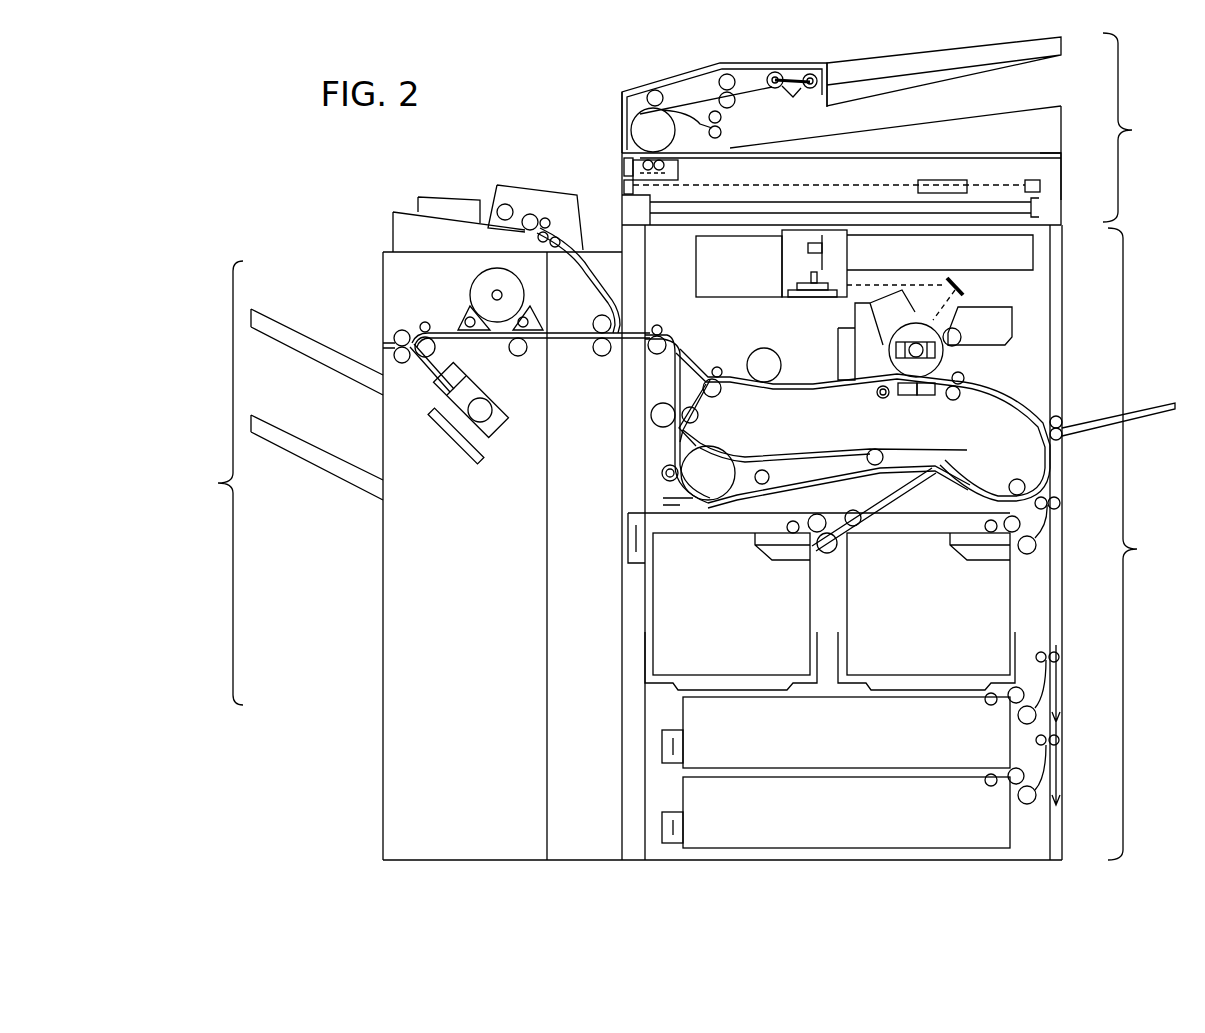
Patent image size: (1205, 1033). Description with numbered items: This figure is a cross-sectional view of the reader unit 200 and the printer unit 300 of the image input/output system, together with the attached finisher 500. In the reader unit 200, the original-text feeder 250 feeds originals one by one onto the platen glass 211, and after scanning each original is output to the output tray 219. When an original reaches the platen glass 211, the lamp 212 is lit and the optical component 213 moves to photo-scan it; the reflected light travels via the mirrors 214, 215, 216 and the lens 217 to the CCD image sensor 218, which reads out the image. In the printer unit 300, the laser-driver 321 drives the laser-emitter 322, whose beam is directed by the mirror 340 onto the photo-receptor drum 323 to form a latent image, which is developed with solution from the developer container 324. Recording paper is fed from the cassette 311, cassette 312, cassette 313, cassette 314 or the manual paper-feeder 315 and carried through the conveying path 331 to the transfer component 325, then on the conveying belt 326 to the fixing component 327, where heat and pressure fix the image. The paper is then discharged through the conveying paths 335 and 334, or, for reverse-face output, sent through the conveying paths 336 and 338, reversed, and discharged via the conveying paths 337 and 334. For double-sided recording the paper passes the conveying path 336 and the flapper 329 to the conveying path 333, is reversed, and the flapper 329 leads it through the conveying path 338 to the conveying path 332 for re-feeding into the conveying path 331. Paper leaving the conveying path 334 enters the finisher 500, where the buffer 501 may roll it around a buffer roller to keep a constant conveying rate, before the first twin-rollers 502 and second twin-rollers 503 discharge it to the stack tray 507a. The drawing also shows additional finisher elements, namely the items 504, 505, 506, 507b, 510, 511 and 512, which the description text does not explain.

The reader unit 200 is at (1140, 127).
The platen glass 211 is at (1053, 152).
The lamp 212 is at (628, 136).
The optical component 213 is at (678, 162).
The mirror 214 is at (680, 175).
The mirror 215 is at (631, 165).
The mirror 216 is at (628, 190).
The lens 217 is at (965, 183).
The CCD image sensor 218 is at (1042, 186).
The output tray 219 is at (993, 110).
The original-text feeder 250 is at (835, 85).
The printer unit 300 is at (1145, 544).
The cassette 311 is at (1010, 600).
The cassette 312 is at (645, 655).
The cassette 313 is at (1010, 740).
The cassette 314 is at (1010, 830).
The manual paper-feeder 315 is at (1063, 422).
The laser-driver 321 is at (695, 270).
The laser-emitter 322 is at (808, 297).
The photo-receptor drum 323 is at (888, 353).
The developer container 324 is at (1017, 330).
The transfer component 325 is at (924, 398).
The conveying belt 326 is at (843, 400).
The fixing component 327 is at (747, 367).
The flapper 329 is at (680, 442).
The conveying path 331 is at (985, 392).
The conveying path 332 is at (800, 478).
The conveying path 333 is at (773, 457).
The conveying path 334 is at (633, 332).
The conveying path 335 is at (683, 352).
The conveying path 336 is at (706, 396).
The conveying path 337 is at (675, 390).
The conveying path 338 is at (707, 480).
The mirror 340 is at (966, 287).
The finisher 500 is at (210, 483).
The buffer 501 is at (470, 290).
The first twin-rollers 502 is at (420, 327).
The second twin-rollers 503 is at (395, 335).
The conveyance roller 504 is at (437, 352).
The conveyance path 505 is at (428, 368).
The stapler unit 506 is at (458, 448).
The stack tray 507a is at (320, 360).
The discharge tray 507b is at (320, 463).
The upper tray 510 is at (468, 197).
The sheet insertion tray 511 is at (530, 210).
The entrance roller pair 512 is at (597, 357).